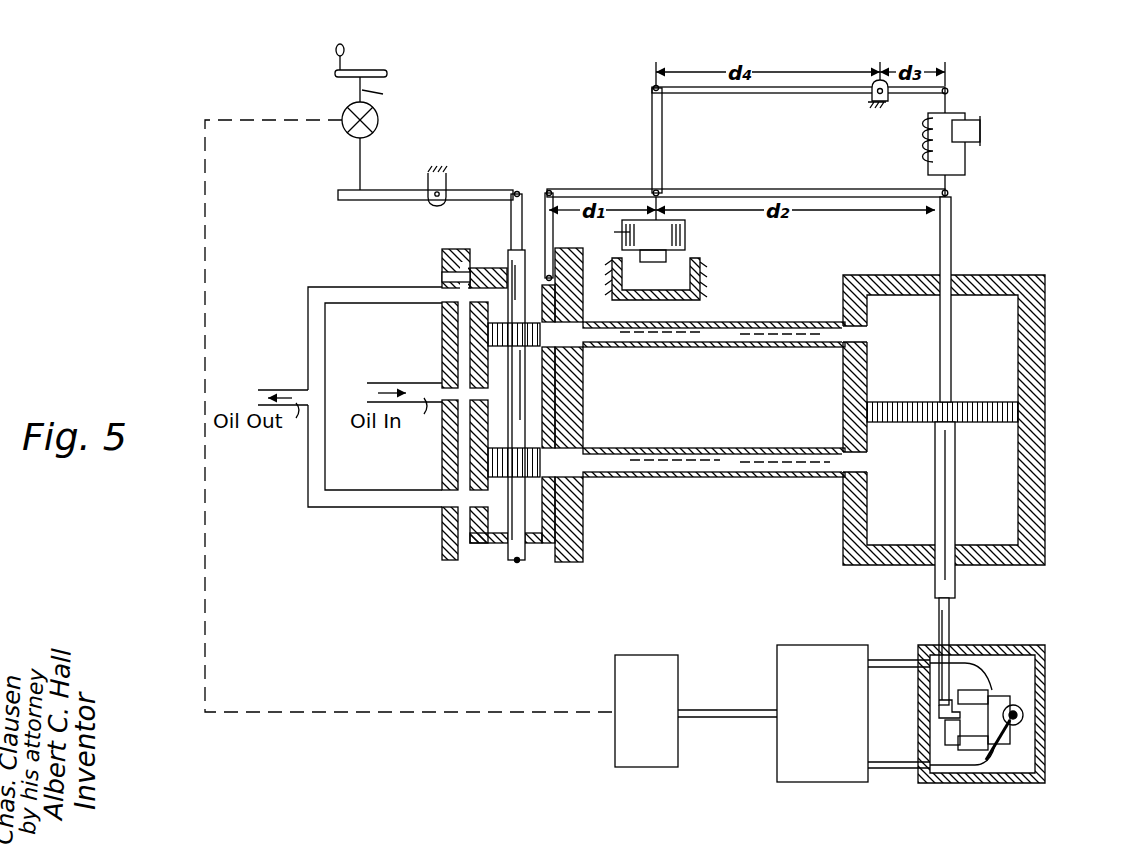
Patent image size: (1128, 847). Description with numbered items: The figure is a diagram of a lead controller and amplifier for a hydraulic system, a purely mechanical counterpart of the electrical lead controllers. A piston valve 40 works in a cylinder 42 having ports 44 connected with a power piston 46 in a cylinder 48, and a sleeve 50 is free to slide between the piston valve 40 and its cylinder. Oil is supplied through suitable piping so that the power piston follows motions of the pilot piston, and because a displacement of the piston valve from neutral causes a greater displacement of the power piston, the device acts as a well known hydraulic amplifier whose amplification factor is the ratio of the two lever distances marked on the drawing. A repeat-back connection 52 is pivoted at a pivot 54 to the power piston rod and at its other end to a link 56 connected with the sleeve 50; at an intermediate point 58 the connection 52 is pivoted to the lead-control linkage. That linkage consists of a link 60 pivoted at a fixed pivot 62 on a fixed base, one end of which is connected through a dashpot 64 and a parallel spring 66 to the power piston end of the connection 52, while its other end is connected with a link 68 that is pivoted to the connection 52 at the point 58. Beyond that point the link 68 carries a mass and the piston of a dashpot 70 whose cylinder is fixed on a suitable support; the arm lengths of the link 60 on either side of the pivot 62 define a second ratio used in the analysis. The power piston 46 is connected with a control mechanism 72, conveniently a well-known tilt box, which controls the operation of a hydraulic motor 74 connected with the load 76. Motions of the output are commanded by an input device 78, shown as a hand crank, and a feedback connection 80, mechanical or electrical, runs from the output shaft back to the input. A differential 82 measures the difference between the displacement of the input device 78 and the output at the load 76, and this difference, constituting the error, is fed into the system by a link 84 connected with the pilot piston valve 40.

The piston valve 40 is at (520, 563).
The cylinder 42 is at (585, 536).
The ports 44 is at (596, 463).
The power piston 46 is at (948, 588).
The cylinder 48 is at (1040, 512).
The sleeve 50 is at (490, 546).
The repeat-back connection 52 is at (872, 198).
The pivot 54 is at (948, 194).
The link 56 is at (547, 190).
The intermediate point 58 is at (658, 192).
The link 60 is at (808, 94).
The pivot 62 is at (878, 87).
The dashpot 64 is at (982, 131).
The spring 66 is at (926, 140).
The link 68 is at (652, 125).
The dashpot 70 is at (680, 262).
The control mechanism 72 is at (1020, 785).
The hydraulic motor 74 is at (845, 776).
The load 76 is at (665, 762).
The input device 78 is at (335, 73).
The connection 80 is at (205, 187).
The differential 82 is at (343, 128).
The link 84 is at (400, 193).